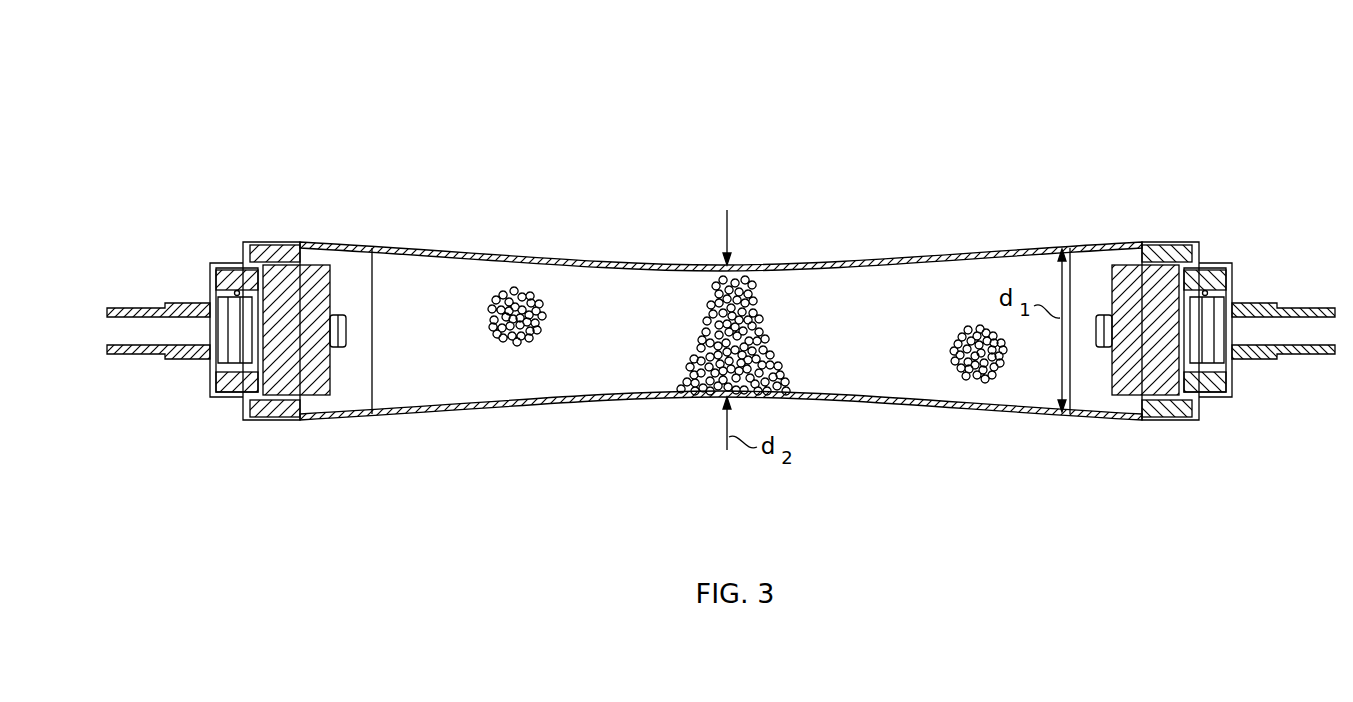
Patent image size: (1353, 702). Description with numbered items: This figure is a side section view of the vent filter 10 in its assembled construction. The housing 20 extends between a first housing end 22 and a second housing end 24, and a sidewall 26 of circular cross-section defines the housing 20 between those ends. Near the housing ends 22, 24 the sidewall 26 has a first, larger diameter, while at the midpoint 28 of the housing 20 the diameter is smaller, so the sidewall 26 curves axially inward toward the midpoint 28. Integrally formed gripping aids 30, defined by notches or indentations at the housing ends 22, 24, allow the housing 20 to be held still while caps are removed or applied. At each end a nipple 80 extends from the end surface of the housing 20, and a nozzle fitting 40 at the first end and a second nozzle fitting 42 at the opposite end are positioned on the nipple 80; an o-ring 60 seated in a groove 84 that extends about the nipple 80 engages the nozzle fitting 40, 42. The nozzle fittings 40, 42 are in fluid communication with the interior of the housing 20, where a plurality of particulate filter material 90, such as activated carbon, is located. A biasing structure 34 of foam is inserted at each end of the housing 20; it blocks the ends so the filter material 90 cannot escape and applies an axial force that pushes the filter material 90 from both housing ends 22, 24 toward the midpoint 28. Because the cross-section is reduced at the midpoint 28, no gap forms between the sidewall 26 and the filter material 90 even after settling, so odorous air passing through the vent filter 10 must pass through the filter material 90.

The vent filter 10 is at (1015, 93).
The housing 20 is at (480, 251).
The first housing end 22 is at (310, 232).
The second housing end 24 is at (1123, 232).
The sidewall 26 is at (619, 343).
The midpoint 28 is at (800, 263).
The gripping aids 30 is at (337, 348).
The biasing structure 34 is at (325, 278).
The nozzle fitting 40 is at (128, 355).
The second nozzle fitting 42 is at (1268, 358).
The o-ring 60 is at (233, 288).
The nipple 80 is at (212, 373).
The groove 84 is at (237, 330).
The filter material 90 is at (548, 283).